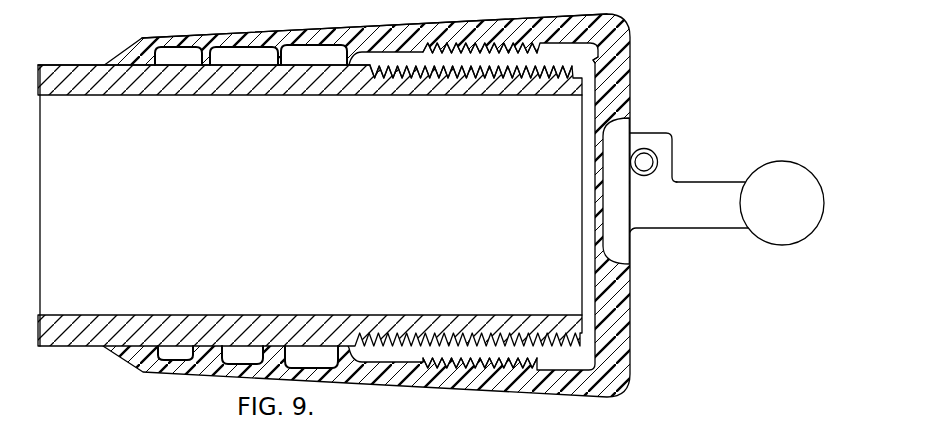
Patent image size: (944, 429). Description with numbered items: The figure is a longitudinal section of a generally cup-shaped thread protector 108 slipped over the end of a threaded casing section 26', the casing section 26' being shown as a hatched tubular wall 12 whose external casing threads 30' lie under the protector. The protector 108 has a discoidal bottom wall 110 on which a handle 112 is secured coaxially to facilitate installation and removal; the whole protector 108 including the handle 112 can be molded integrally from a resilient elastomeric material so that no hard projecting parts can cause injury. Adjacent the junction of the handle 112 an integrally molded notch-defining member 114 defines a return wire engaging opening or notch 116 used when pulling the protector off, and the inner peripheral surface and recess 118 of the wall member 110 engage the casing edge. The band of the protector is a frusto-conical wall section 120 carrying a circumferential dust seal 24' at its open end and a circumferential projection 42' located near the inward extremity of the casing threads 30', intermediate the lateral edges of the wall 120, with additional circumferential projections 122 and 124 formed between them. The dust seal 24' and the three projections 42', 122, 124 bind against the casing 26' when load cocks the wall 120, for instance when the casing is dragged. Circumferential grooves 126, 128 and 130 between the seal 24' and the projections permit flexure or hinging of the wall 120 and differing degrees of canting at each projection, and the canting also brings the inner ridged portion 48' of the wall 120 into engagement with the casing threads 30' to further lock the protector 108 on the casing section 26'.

The tube 12 is at (170, 121).
The circumferential dust seal 24' is at (204, 92).
The casing section 26' is at (438, 95).
The casing threads 30' is at (496, 56).
The circumferential projection 42' is at (314, 56).
The inner threaded or circumferentially ridged portion 48' is at (499, 360).
The protector 108 is at (263, 34).
The bottom wall 110 is at (629, 287).
The handle 112 is at (720, 216).
The notch-defining member 114 is at (673, 140).
The return wire engaging opening or notch 116 is at (645, 165).
The recess 118 is at (600, 58).
The frusto-conical wall section 120 is at (372, 45).
The circumferential projection 122 is at (208, 57).
The circumferential projection 124 is at (275, 34).
The circumferential groove 126 is at (182, 359).
The circumferential groove 128 is at (242, 363).
The circumferential groove 130 is at (297, 366).